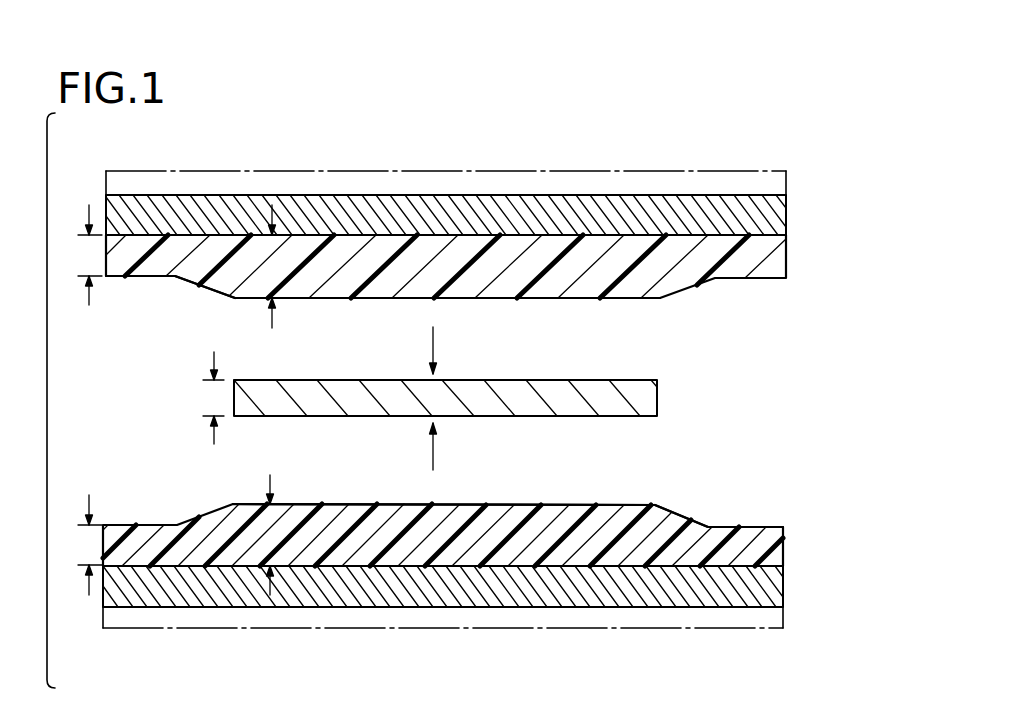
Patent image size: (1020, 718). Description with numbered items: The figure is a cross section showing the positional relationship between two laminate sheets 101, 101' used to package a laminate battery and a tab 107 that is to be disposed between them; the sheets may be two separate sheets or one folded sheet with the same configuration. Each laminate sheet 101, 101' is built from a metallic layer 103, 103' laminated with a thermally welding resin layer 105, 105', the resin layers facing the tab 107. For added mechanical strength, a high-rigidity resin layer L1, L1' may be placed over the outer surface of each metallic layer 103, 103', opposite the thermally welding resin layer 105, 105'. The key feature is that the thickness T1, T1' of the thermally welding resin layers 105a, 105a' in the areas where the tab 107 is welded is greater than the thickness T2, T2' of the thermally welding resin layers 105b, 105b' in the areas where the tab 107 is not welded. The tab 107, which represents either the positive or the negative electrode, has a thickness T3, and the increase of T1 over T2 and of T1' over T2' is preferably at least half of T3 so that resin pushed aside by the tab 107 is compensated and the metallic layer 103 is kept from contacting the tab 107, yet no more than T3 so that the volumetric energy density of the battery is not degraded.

The laminate sheet 101 is at (517, 260).
The metallic layer 103 is at (484, 215).
The thermally welding resin layer 105 is at (484, 294).
The thermally welding resin layer area where tab is welded 105a is at (447, 318).
The thermally welding resin layer area where tab is not welded 105b is at (170, 307).
The tab 107 is at (660, 400).
The laminate sheet 101' is at (515, 541).
The metallic layer 103' is at (485, 586).
The thermally welding resin layer 105' is at (485, 508).
The thermally welding resin layer area where tab is welded 105a' is at (447, 480).
The thermally welding resin layer area where tab is not welded 105b' is at (728, 500).
The resin layer L1 is at (446, 153).
The resin layer L1' is at (443, 647).
The thickness of thermally welding resin layer at tab-welded area T1 is at (256, 266).
The thickness of thermally welding resin layer at non-welded area T2 is at (77, 255).
The thickness of tab T3 is at (201, 398).
The thickness of thermally welding resin layer at tab-welded area T1' is at (247, 535).
The thickness of thermally welding resin layer at non-welded area T2' is at (74, 545).